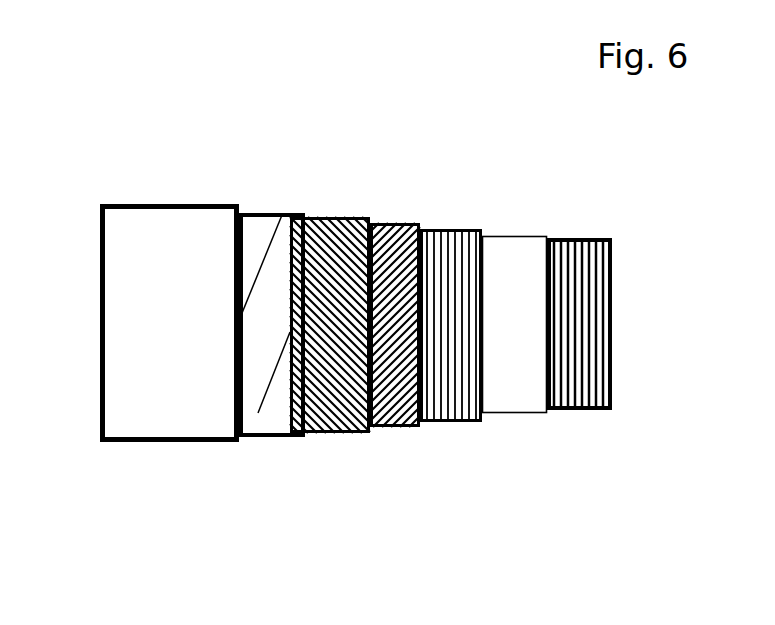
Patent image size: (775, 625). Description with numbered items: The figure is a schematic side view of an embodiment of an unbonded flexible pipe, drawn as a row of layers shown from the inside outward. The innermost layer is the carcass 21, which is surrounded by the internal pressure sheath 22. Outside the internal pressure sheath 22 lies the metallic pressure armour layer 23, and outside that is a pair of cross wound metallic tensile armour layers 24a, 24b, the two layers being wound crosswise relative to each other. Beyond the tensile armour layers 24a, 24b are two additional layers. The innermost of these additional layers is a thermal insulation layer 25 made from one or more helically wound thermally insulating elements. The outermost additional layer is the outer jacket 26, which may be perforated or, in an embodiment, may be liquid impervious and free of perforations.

The carcass 21 is at (580, 391).
The internal pressure sheath 22 is at (503, 393).
The metallic pressure armour layer 23 is at (427, 399).
The cross wound metallic tensile armour layer 24a is at (390, 241).
The cross wound metallic tensile armour layer 24b is at (338, 232).
The thermal insulation layer 25 is at (258, 413).
The outer jacket 26 is at (128, 203).